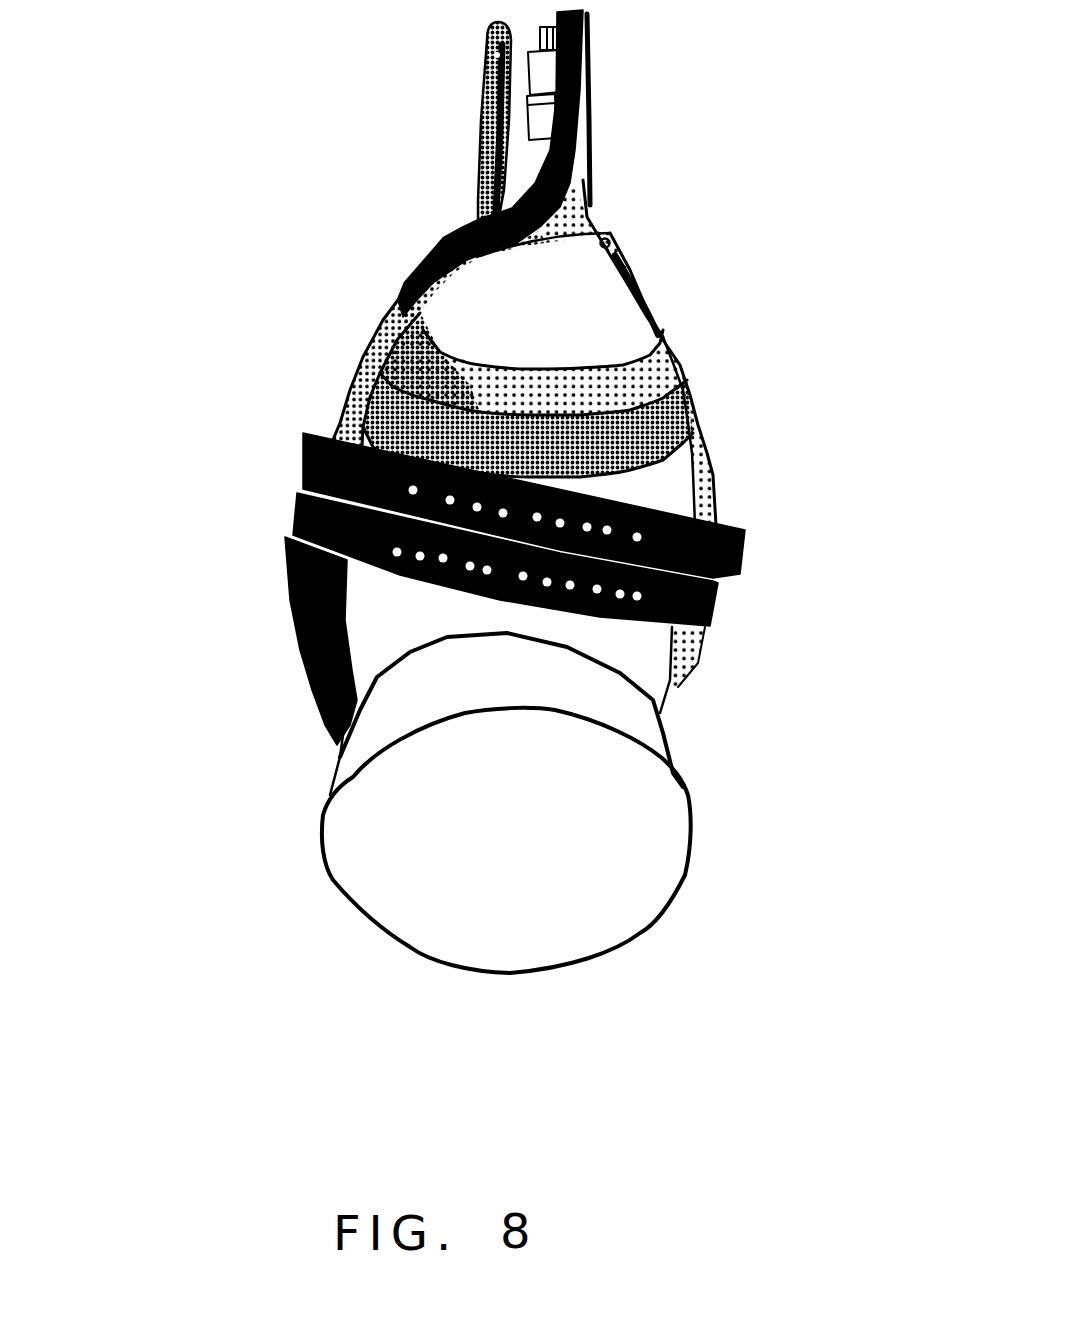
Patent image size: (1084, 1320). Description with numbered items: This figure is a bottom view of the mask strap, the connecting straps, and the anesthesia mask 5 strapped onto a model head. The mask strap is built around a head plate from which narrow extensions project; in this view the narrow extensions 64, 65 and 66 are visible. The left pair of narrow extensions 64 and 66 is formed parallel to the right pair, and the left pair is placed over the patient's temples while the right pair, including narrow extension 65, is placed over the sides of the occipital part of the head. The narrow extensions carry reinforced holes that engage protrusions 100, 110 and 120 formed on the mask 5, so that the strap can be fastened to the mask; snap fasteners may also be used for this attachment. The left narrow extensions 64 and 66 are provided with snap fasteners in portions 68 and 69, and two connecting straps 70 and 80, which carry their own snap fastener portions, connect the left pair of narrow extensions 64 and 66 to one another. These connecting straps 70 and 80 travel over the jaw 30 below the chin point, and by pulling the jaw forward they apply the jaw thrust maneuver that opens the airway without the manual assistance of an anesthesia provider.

The mask 5 is at (666, 421).
The jaw 30 is at (360, 570).
The narrow extension 64 is at (647, 295).
The narrow extension 65 is at (480, 82).
The narrow extension 66 is at (380, 343).
The snap fastener portion 68 is at (707, 500).
The snap fastener portion 69 is at (353, 403).
The connecting strap 70 is at (740, 539).
The connecting strap 80 is at (722, 596).
The protrusion 100 is at (460, 223).
The protrusion 110 is at (440, 263).
The protrusion 120 is at (612, 241).